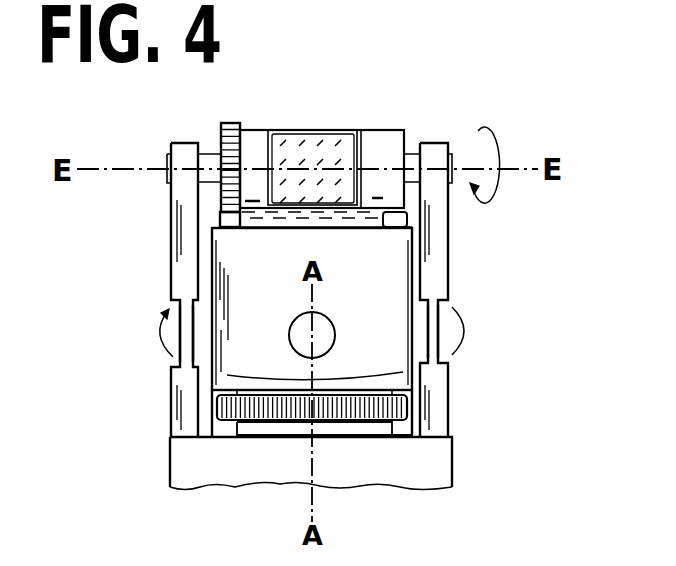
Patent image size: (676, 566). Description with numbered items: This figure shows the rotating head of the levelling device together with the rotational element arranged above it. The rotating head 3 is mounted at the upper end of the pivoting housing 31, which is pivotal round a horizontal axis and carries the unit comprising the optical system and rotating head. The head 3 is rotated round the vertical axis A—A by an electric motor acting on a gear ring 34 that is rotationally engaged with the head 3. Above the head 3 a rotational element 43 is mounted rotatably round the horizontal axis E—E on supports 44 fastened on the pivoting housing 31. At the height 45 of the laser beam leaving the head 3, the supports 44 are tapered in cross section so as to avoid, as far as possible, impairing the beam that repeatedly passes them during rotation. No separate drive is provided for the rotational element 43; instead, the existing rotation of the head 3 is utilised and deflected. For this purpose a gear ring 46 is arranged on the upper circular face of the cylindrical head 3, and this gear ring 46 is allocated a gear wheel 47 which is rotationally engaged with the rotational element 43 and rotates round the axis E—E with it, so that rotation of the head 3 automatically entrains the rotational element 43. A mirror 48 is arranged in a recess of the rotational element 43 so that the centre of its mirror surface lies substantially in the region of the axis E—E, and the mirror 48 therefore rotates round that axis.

The rotating head 3 is at (472, 393).
The pivoting housing 31 is at (413, 467).
The gear ring 34 is at (397, 408).
The rotational element 43 is at (383, 143).
The supports 44 is at (187, 283).
The height of the laser beam 45 is at (188, 330).
The gear ring 46 is at (397, 218).
The gear wheel 47 is at (235, 125).
The mirror 48 is at (313, 148).